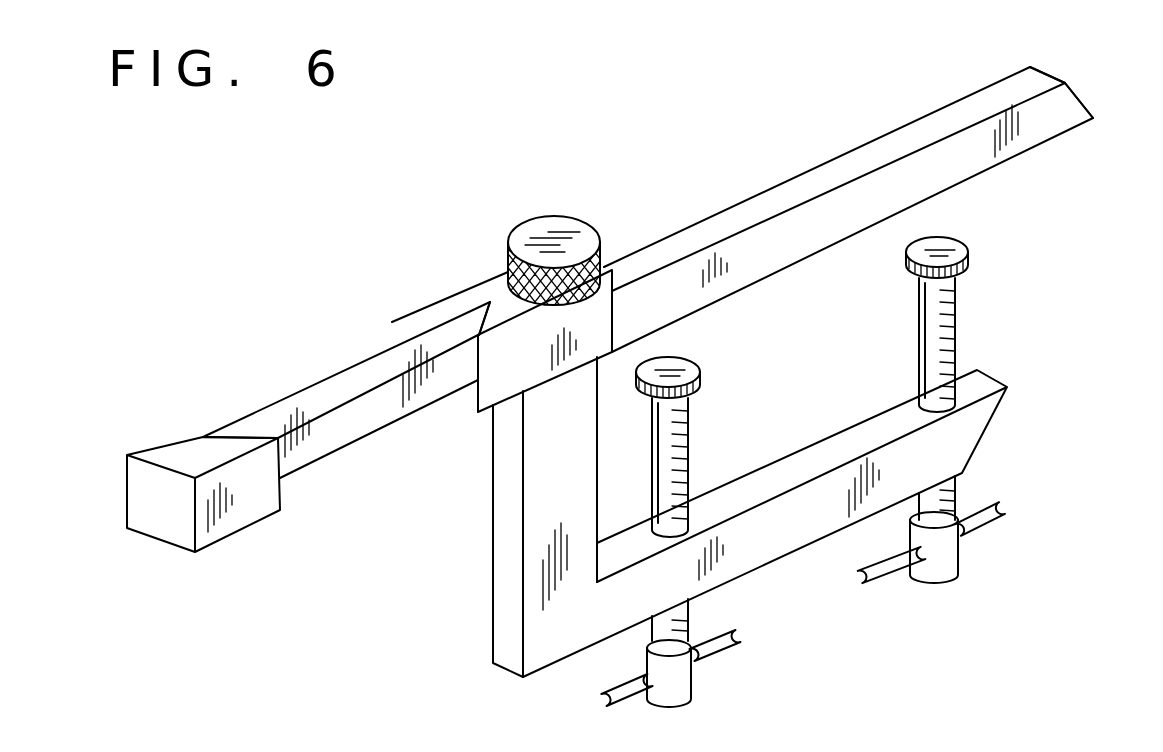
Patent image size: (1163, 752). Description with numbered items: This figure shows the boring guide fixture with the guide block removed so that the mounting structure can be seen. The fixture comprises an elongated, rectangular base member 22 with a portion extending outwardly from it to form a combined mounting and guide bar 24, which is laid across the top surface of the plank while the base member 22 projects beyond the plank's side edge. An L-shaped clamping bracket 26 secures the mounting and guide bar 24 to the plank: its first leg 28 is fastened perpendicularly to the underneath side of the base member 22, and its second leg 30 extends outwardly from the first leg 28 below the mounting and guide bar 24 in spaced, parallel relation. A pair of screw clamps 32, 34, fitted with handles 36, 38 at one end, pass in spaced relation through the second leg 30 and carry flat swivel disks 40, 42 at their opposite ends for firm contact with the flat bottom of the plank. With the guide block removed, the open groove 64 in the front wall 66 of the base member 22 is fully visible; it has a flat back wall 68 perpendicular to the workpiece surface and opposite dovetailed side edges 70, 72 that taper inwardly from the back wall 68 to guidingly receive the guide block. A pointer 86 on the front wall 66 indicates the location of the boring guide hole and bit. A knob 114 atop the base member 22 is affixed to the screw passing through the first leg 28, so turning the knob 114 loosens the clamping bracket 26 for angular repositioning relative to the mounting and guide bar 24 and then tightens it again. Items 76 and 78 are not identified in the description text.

The base member 22 is at (339, 411).
The mounting and guide bar 24 is at (877, 200).
The clamping bracket 26 is at (727, 517).
The first leg 28 is at (493, 460).
The second leg 30 is at (980, 418).
The screw clamp 32 is at (690, 486).
The screw clamp 34 is at (898, 378).
The handle 36 is at (712, 652).
The handle 38 is at (969, 532).
The flat swivel disk 40 is at (677, 360).
The flat swivel disk 42 is at (915, 257).
The open groove 64 is at (355, 409).
The front wall 66 is at (583, 323).
The back wall 68 is at (363, 424).
The dovetailed edge 70 is at (238, 436).
The dovetailed edge 72 is at (478, 323).
The side face of bar 76 is at (990, 165).
The bar end 78 is at (1060, 112).
The pointer 86 is at (276, 502).
The knob 114 is at (570, 240).